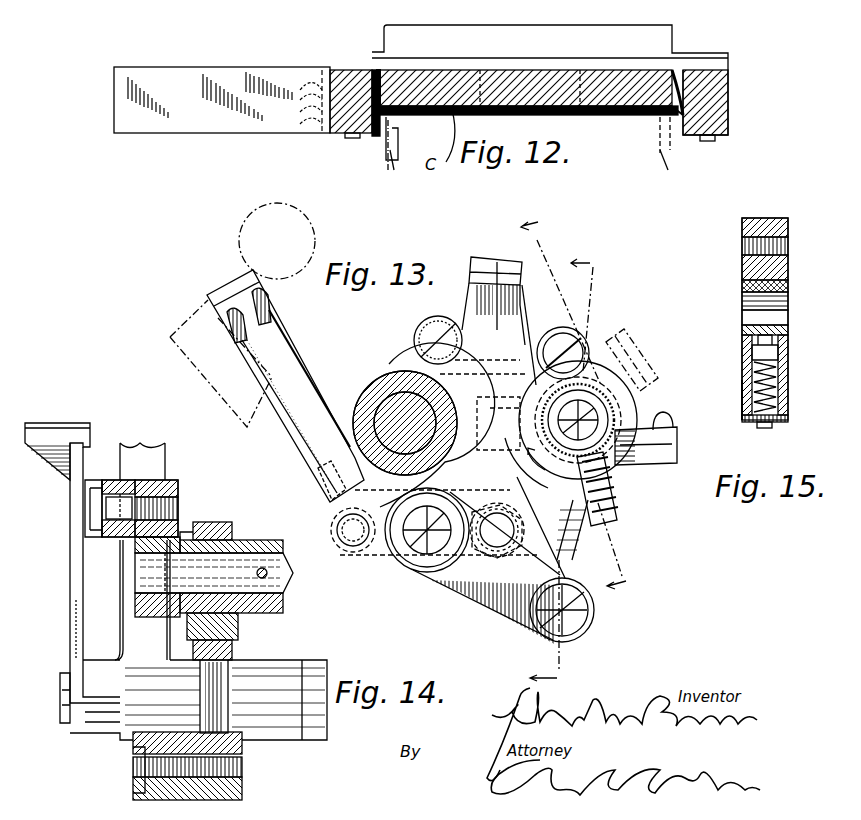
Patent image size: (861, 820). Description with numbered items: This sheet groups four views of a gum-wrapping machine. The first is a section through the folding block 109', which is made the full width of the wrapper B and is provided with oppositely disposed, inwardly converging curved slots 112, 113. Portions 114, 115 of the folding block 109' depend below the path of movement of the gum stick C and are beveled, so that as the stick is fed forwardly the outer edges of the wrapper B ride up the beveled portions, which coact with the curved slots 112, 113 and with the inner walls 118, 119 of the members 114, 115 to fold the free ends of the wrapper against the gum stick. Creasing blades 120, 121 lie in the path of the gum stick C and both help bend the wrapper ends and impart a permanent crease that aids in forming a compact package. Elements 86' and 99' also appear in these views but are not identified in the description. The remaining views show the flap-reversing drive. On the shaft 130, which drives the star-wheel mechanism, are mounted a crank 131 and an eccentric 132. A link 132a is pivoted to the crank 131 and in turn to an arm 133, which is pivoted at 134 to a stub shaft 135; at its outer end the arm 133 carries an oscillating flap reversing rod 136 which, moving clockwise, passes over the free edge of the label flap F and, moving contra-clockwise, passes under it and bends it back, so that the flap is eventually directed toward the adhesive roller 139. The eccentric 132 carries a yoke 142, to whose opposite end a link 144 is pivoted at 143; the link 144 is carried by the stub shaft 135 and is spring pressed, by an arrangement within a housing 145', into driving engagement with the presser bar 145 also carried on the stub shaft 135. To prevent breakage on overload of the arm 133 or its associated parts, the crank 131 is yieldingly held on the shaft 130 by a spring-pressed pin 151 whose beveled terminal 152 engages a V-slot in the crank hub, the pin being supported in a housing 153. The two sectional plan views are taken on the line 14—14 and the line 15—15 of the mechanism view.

In FIG. 12, the guide pins 86' is at (529, 157).
In FIG. 13, the gear 99' is at (405, 407).
In FIG. 12, the folding block 109' is at (526, 68).
In FIG. 12, the curved slot 112 is at (395, 88).
In FIG. 12, the curved slot 113 is at (675, 70).
In FIG. 12, the depending portion of the folding block 114 is at (344, 126).
In FIG. 12, the depending portion of the folding block 115 is at (716, 118).
In FIG. 12, the inner wall 118 is at (390, 122).
In FIG. 12, the inner wall 119 is at (666, 122).
In FIG. 12, the creasing blade 120 is at (345, 90).
In FIG. 12, the creasing blade 121 is at (686, 84).
In FIG. 13, the shaft 130 is at (635, 404).
In FIG. 14, the shaft 130 is at (292, 588).
In FIG. 13, the crank 131 is at (596, 340).
In FIG. 14, the crank 131 is at (180, 488).
In FIG. 15, the crank 131 is at (742, 226).
In FIG. 13, the eccentric 132 is at (640, 470).
In FIG. 14, the eccentric 132 is at (230, 530).
In FIG. 13, the link 132a is at (565, 330).
In FIG. 14, the link 132a is at (108, 480).
In FIG. 13, the arm 133 is at (452, 431).
In FIG. 14, the arm 133 is at (72, 560).
In FIG. 13, the pivot 134 is at (430, 550).
In FIG. 13, the stub shaft 135 is at (392, 562).
In FIG. 14, the stub shaft 135 is at (64, 725).
In FIG. 13, the oscillating flap reversing rod 136 is at (490, 262).
In FIG. 14, the oscillating flap reversing rod 136 is at (62, 430).
In FIG. 13, the roller 139 is at (312, 232).
In FIG. 13, the yoke 142 is at (565, 545).
In FIG. 14, the yoke 142 is at (225, 683).
In FIG. 13, the pivot 143 is at (596, 616).
In FIG. 14, the pivot 143 is at (150, 766).
In FIG. 13, the link 144 is at (515, 603).
In FIG. 14, the link 144 is at (140, 793).
In FIG. 13, the presser bar 145 is at (267, 386).
In FIG. 14, the presser bar 145 is at (129, 600).
In FIG. 13, the housing 145' is at (295, 480).
In FIG. 15, the spring-pressed pin 151 is at (745, 354).
In FIG. 13, the beveled terminal 152 is at (673, 426).
In FIG. 13, the housing 153 is at (620, 509).
In FIG. 15, the housing 153 is at (746, 420).
In FIG. 13, the section line 14 is at (572, 469).
In FIG. 13, the section line 15 is at (584, 398).